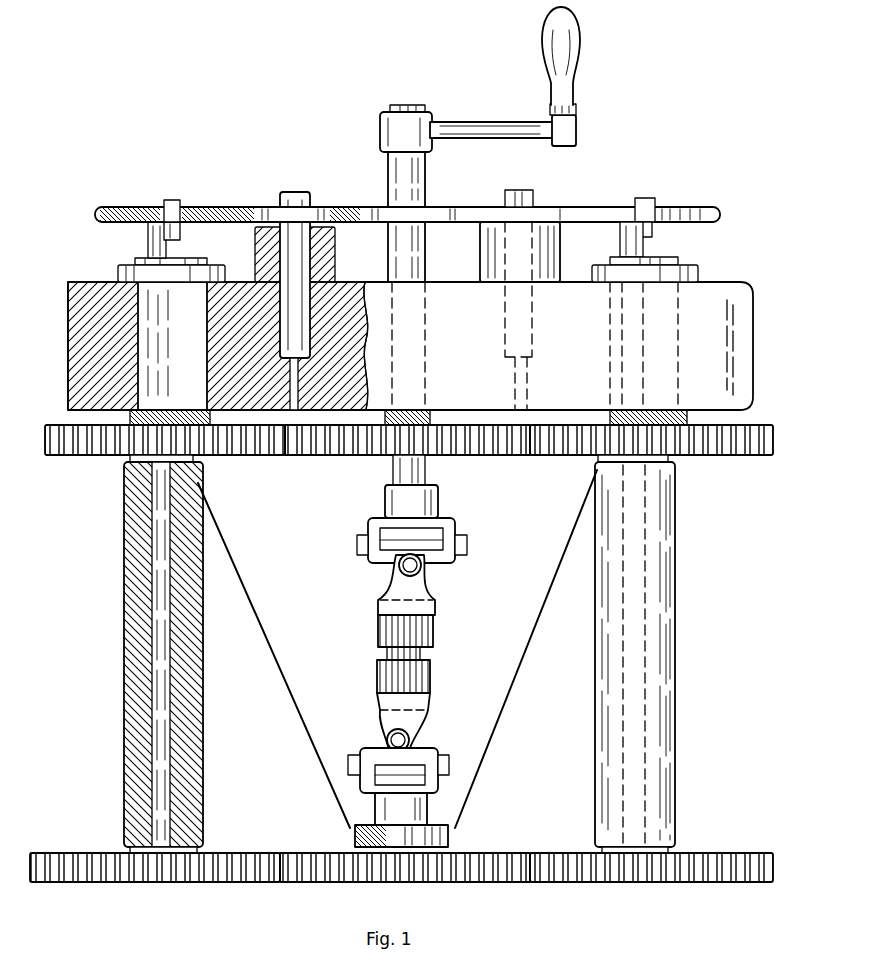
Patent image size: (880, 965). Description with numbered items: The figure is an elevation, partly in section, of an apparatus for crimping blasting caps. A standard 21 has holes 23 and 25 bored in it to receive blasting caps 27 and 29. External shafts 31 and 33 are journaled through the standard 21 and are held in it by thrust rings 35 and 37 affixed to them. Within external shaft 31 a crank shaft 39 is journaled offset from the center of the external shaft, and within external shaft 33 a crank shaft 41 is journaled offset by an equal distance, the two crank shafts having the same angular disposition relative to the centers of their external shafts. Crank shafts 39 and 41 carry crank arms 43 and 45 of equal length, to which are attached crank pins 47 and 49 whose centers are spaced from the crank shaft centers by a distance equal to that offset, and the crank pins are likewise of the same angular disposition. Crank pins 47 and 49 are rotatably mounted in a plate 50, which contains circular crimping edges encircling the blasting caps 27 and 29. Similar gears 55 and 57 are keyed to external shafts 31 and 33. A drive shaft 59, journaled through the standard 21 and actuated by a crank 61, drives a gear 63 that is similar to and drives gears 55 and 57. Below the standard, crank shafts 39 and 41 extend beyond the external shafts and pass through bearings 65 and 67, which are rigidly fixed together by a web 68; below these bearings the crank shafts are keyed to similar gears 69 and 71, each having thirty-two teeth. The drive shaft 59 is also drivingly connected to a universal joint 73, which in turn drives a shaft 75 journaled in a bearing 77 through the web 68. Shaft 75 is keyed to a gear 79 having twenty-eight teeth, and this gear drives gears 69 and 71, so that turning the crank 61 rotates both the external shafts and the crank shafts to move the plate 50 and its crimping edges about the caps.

The standard 21 is at (752, 331).
The hole 23 is at (318, 255).
The hole 25 is at (502, 290).
The blasting cap 27 is at (287, 204).
The blasting cap 29 is at (524, 196).
The external shaft 31 is at (134, 260).
The external shaft 33 is at (668, 259).
The thrust ring 35 is at (118, 272).
The thrust ring 37 is at (698, 273).
The crank shaft 39 is at (148, 248).
The crank shaft 41 is at (620, 248).
The crank arm 43 is at (180, 236).
The crank arm 45 is at (652, 230).
The crank pin 47 is at (165, 204).
The crank pin 49 is at (648, 200).
The plate 50 is at (705, 206).
The gear 55 is at (95, 455).
The gear 57 is at (705, 455).
The drive shaft 59 is at (425, 190).
The crank 61 is at (476, 122).
The gear 63 is at (450, 454).
The bearing 65 is at (123, 618).
The bearing 67 is at (675, 617).
The web 68 is at (276, 660).
The gear 69 is at (203, 882).
The gear 71 is at (692, 882).
The universal joint 73 is at (432, 627).
The shaft 75 is at (376, 830).
The bearing 77 is at (440, 826).
The gear 79 is at (450, 882).